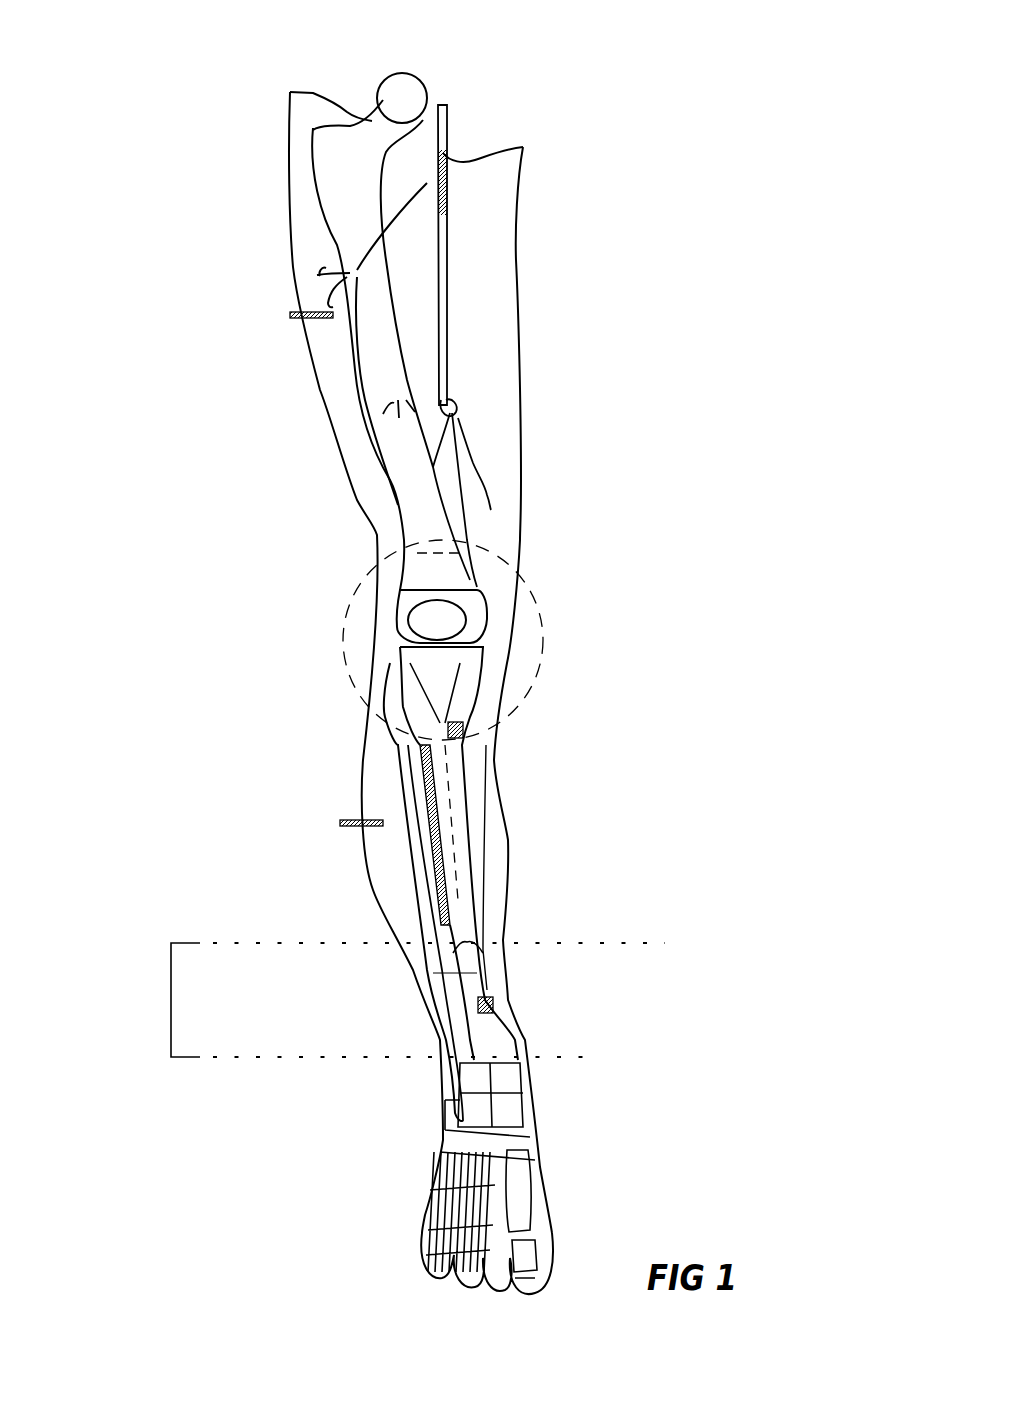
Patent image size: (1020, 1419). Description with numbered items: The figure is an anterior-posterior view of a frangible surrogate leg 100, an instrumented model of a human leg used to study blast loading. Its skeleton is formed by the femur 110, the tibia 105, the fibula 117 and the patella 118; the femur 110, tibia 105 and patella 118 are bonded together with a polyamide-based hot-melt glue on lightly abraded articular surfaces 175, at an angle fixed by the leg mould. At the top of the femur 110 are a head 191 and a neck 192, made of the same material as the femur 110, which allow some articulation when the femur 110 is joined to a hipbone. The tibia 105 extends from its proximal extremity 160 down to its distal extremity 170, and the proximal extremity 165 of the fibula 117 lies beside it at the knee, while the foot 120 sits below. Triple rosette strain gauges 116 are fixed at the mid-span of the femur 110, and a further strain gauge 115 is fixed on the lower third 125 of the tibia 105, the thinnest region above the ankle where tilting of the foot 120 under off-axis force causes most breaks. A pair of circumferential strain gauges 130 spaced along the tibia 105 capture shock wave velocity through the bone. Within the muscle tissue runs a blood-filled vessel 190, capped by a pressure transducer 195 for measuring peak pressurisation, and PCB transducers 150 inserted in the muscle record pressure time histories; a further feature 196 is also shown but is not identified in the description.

The frangible surrogate leg 100 is at (240, 550).
The tibia 105 is at (462, 790).
The femur 110 is at (420, 497).
The strain gauge 115 is at (490, 950).
The strain gauges 116 is at (377, 410).
The fibula 117 is at (433, 973).
The patella 118 is at (460, 613).
The foot 120 is at (445, 1150).
The lower third of the tibia 125 is at (170, 1001).
The circumferential strain gauges 130 is at (462, 730).
The PCB transducers 150 is at (290, 316).
The proximal extremity of the tibia 160 is at (450, 665).
The proximal extremity of the fibula 165 is at (385, 695).
The distal extremity of the tibia 170 is at (458, 840).
The joining surfaces 175 is at (425, 638).
The vessel 190 is at (445, 115).
The head of the femur 191 is at (387, 85).
The neck of the femur 192 is at (378, 110).
The pressure transducer 195 is at (480, 560).
The rod tip 196 is at (443, 194).